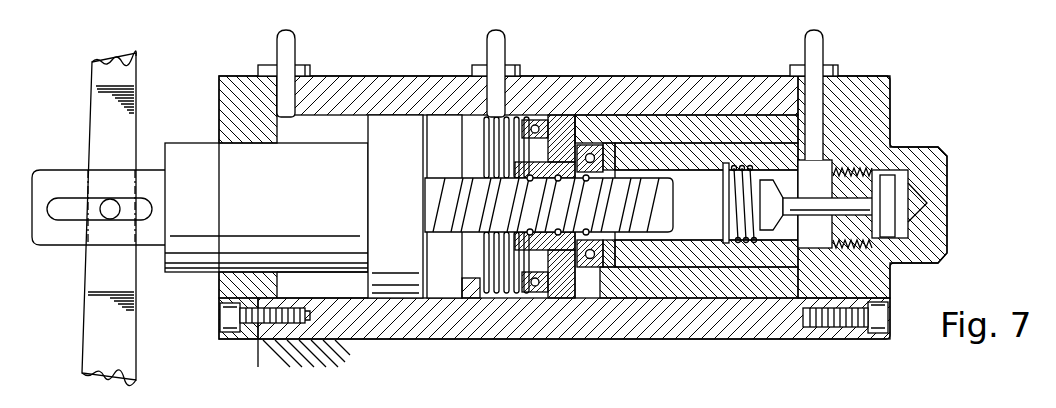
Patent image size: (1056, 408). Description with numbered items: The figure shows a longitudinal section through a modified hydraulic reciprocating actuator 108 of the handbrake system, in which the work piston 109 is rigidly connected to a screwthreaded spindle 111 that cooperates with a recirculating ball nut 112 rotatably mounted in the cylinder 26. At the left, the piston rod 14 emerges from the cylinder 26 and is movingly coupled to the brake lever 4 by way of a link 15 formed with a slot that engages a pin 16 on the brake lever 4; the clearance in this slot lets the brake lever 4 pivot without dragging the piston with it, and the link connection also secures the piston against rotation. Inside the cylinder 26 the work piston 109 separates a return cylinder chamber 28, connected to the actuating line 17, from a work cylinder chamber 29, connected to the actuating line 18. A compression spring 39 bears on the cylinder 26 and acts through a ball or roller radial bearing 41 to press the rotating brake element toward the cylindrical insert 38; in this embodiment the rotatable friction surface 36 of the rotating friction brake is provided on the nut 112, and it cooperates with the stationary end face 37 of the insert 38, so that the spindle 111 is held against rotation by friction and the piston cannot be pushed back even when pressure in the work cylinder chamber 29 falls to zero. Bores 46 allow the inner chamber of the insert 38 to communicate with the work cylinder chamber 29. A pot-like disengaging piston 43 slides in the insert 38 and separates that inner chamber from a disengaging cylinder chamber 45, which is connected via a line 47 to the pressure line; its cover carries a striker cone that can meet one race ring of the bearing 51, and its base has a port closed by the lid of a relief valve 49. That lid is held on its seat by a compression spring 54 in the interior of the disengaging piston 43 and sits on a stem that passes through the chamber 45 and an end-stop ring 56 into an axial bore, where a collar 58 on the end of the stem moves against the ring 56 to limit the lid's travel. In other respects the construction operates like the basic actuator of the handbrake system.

The brake lever 4 is at (92, 342).
The piston rod 14 is at (192, 253).
The link 15 is at (63, 234).
The pin 16 is at (109, 199).
The actuating line 17 is at (287, 49).
The actuating line 18 is at (497, 46).
The cylinder 26 is at (388, 322).
The return cylinder chamber 28 is at (342, 286).
The work cylinder chamber 29 is at (450, 286).
The friction surface 36 is at (588, 270).
The end face 37 is at (580, 262).
The cylindrical insert 38 is at (752, 286).
The compression spring 39 is at (486, 292).
The radial bearing 41 is at (527, 293).
The disengaging piston 43 is at (707, 258).
The disengaging cylinder chamber 45 is at (823, 168).
The bores 46 is at (560, 148).
The line 47 is at (818, 45).
The relief valve 49 is at (815, 230).
The bearing 51 is at (590, 270).
The compression spring 54 is at (742, 195).
The end-stop ring 56 is at (884, 274).
The collar 58 is at (890, 187).
The reciprocating actuator 108 is at (935, 88).
The work piston 109 is at (415, 284).
The screwthreaded spindle 111 is at (435, 193).
The recirculating ball nut 112 is at (557, 288).